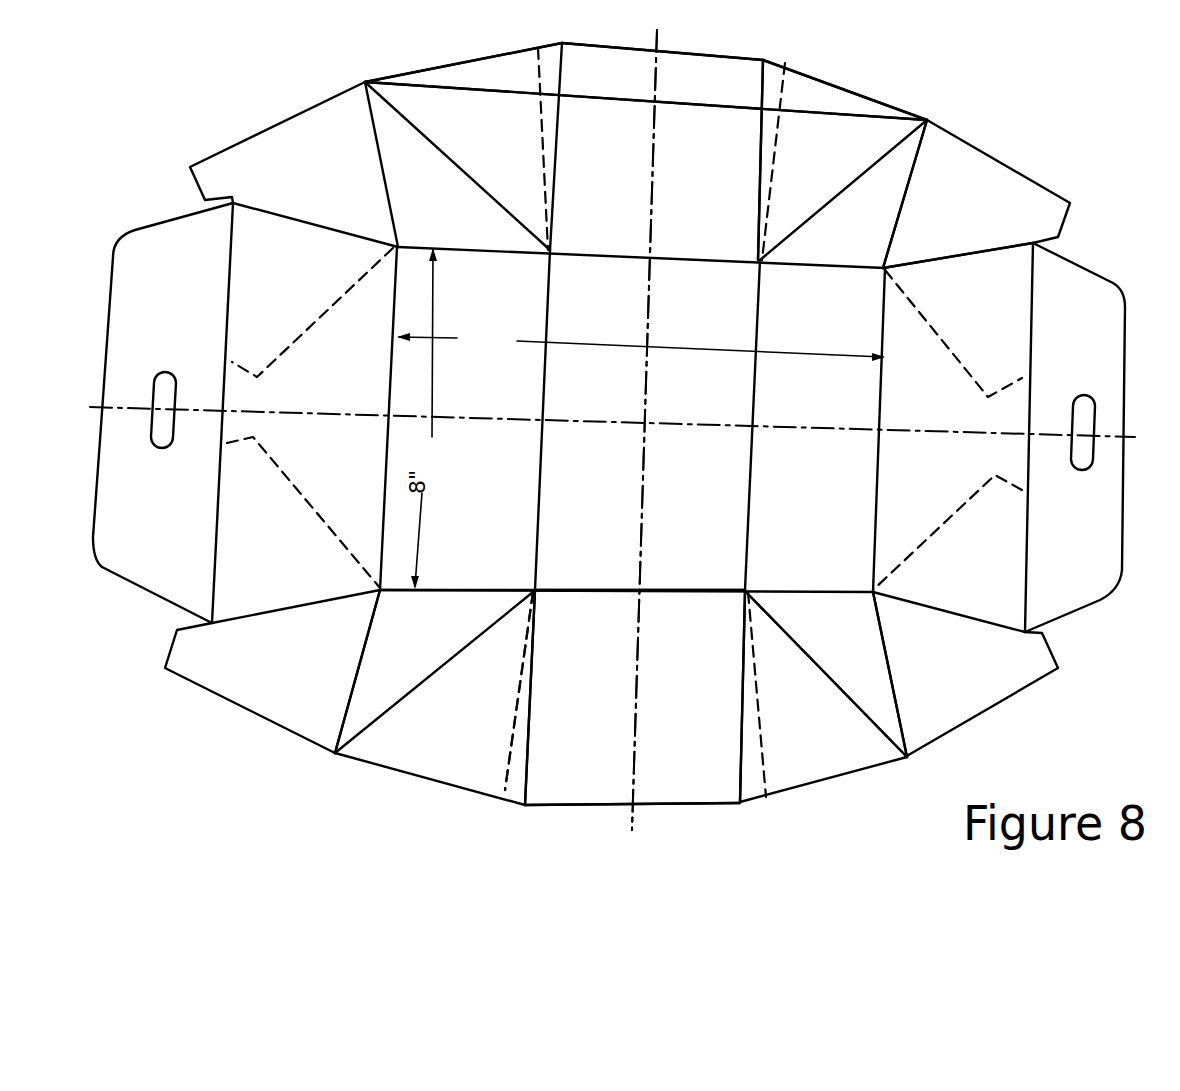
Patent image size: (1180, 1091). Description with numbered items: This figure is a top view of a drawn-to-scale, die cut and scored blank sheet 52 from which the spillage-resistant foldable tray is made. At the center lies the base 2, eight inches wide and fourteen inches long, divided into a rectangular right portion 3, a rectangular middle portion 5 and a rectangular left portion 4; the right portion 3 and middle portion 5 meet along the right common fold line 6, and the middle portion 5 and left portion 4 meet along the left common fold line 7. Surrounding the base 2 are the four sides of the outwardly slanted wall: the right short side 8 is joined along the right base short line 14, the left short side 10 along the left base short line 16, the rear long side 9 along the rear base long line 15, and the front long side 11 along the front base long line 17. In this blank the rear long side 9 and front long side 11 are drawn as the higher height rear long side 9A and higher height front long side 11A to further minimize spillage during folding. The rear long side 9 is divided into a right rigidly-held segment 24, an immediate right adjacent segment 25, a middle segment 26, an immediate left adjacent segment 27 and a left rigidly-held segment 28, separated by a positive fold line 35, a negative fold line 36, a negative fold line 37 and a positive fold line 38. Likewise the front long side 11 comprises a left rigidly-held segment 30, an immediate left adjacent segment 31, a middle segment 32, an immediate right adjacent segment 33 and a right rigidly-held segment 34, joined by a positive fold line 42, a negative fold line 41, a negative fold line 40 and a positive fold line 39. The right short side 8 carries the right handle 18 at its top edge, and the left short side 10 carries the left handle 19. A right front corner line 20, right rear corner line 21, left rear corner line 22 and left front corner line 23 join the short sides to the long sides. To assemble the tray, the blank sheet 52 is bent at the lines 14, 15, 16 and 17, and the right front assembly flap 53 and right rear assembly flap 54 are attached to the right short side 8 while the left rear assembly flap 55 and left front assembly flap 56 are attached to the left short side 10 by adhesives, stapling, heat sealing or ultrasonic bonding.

The blank sheet 52 is at (1075, 120).
The left rear assembly flap 55 is at (240, 163).
The right rear assembly flap 54 is at (1000, 203).
The left front assembly flap 56 is at (235, 680).
The right front assembly flap 53 is at (975, 700).
The left handle 19 is at (125, 575).
The right handle 18 is at (1103, 543).
The left short side 10 is at (253, 558).
The right short side 8 is at (1017, 607).
The left base short line 16 is at (387, 458).
The right base short line 14 is at (878, 410).
The left rear corner line 22 is at (388, 203).
The right rear corner line 21 is at (892, 235).
The rear base long line 15 is at (675, 260).
The immediate left adjacent segment 27 is at (453, 102).
The left rigidly-held segment 28 is at (392, 137).
The fold line 38 is at (467, 175).
The fold line 37 is at (553, 163).
The fold line 36 is at (760, 182).
The fold line 35 is at (803, 222).
The middle segment 26 is at (740, 147).
The higher height rear long side 9A is at (750, 82).
The rear long side 9 is at (735, 122).
The immediate right adjacent segment 25 is at (862, 143).
The right rigidly-held segment 24 is at (870, 193).
The left common fold line 7 is at (537, 548).
The right common fold line 6 is at (745, 510).
The front base long line 17 is at (578, 591).
The right portion 3 is at (758, 575).
The middle portion 5 is at (662, 582).
The base 2 is at (477, 582).
The left portion 4 is at (495, 583).
The left front corner line 23 is at (368, 632).
The right front corner line 20 is at (885, 640).
The fold line 42 is at (475, 638).
The fold line 41 is at (528, 675).
The fold line 40 is at (742, 672).
The fold line 39 is at (800, 650).
The immediate left adjacent segment 31 is at (443, 745).
The left rigidly-held segment 30 is at (362, 703).
The front long side 11 is at (538, 732).
The higher height front long side 11A is at (553, 798).
The middle segment 32 is at (570, 742).
The immediate right adjacent segment 33 is at (780, 745).
The right rigidly-held segment 34 is at (883, 718).